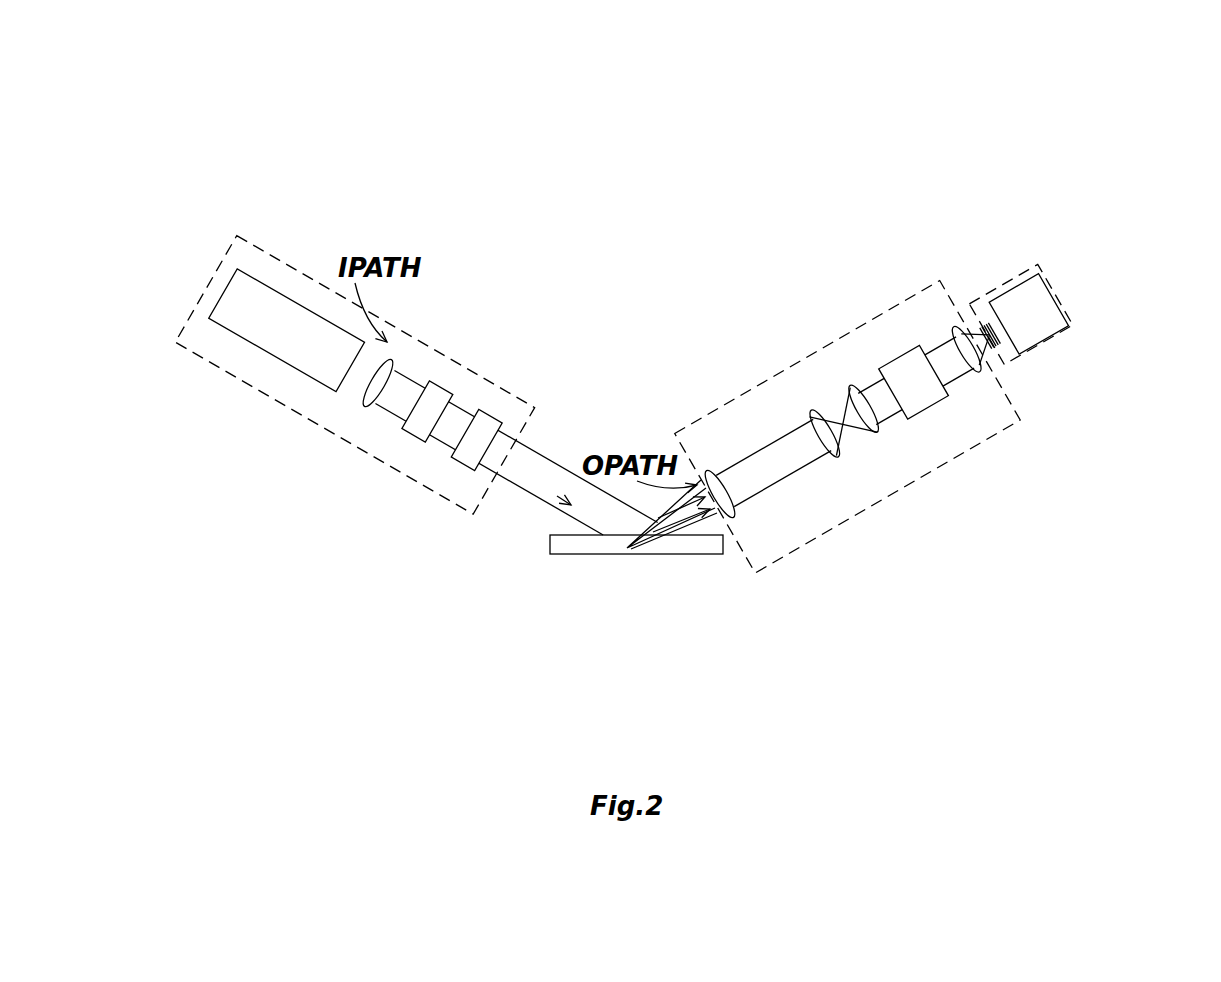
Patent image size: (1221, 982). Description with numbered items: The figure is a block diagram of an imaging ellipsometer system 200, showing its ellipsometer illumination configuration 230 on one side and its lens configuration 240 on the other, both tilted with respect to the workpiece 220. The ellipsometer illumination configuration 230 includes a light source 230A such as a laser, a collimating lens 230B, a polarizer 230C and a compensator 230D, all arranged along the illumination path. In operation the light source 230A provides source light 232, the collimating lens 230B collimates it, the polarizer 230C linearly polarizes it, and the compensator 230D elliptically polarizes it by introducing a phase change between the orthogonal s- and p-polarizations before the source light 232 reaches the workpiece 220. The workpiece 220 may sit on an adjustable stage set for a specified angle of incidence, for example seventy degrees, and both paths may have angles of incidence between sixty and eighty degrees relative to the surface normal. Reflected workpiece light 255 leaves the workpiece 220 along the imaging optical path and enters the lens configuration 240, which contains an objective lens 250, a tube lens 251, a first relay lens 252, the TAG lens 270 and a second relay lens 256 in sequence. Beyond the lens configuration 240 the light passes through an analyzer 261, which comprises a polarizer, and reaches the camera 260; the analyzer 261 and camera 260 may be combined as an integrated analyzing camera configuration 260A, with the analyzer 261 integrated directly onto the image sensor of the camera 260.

The imaging ellipsometer system 200 is at (1158, 106).
The ellipsometer illumination configuration 230 is at (238, 237).
The light source 230A is at (267, 355).
The collimating lens 230B is at (365, 405).
The polarizer 230C is at (405, 433).
The compensator 230D is at (452, 460).
The source light 232 is at (580, 488).
The workpiece 220 is at (590, 555).
The reflected workpiece light 255 is at (701, 520).
The lens configuration 240 is at (803, 357).
The objective lens 250 is at (733, 518).
The tube lens 251 is at (836, 456).
The relay lens 252 is at (876, 434).
The TAG lens 270 is at (928, 404).
The relay lens 256 is at (988, 334).
The analyzer 261 is at (1000, 350).
The camera 260 is at (1040, 347).
The integrated analyzing camera configuration 260A is at (1005, 285).